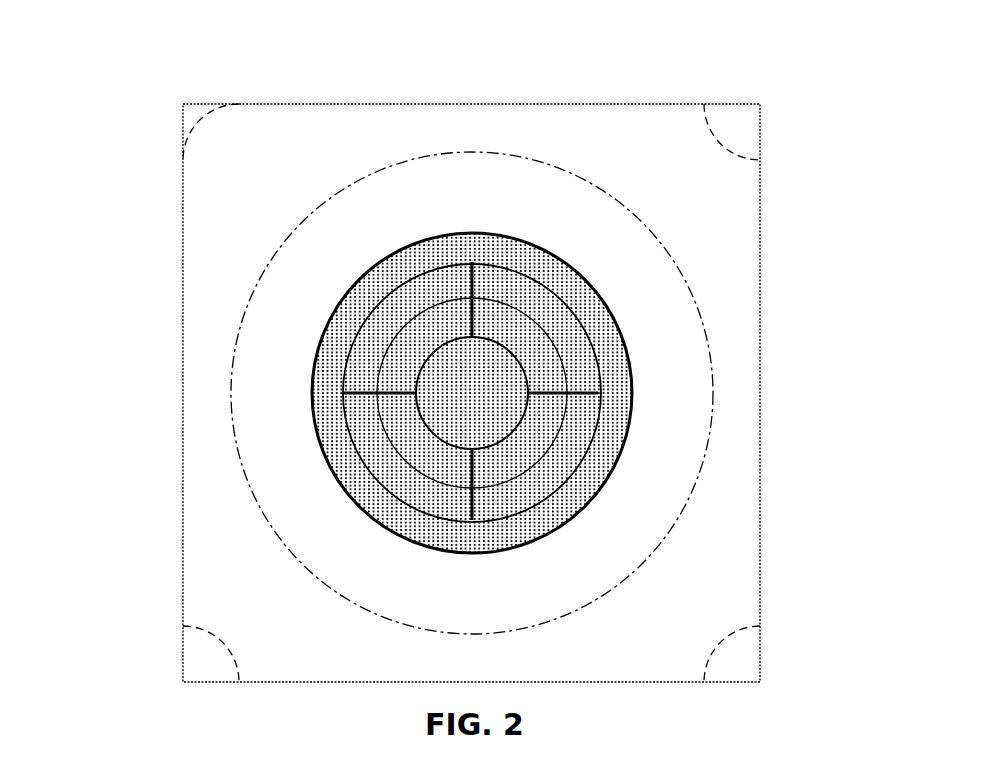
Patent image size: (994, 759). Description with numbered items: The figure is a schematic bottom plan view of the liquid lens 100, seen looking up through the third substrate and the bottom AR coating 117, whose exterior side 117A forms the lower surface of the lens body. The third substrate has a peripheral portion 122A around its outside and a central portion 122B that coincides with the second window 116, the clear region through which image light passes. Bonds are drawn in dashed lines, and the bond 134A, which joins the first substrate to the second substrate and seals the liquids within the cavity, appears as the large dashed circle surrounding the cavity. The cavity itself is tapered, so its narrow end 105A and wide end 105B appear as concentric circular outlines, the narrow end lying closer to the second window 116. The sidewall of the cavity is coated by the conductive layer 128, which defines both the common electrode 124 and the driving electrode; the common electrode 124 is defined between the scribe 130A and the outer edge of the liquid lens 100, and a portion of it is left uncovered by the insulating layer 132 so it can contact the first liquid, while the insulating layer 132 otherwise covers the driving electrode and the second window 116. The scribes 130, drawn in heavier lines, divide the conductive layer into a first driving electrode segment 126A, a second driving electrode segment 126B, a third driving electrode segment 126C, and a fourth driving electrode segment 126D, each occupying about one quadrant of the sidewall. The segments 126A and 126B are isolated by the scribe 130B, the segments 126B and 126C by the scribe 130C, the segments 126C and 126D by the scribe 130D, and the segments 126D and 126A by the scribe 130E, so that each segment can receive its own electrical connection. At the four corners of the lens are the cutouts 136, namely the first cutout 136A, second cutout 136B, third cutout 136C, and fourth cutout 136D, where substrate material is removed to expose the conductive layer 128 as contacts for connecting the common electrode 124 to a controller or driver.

The liquid lens 100 is at (662, 42).
The narrow end 105A is at (413, 412).
The wide end 105B is at (475, 508).
The second window 116 is at (528, 355).
The bottom AR coating 117 is at (740, 242).
The exterior side 117A is at (538, 123).
The peripheral portion 122A is at (190, 388).
The central portion 122B is at (605, 357).
The common electrode 124 is at (447, 187).
The first driving electrode segment 126A is at (423, 330).
The second driving electrode segment 126B is at (490, 325).
The third driving electrode segment 126C is at (525, 440).
The fourth driving electrode segment 126D is at (360, 463).
The conductive layer 128 is at (287, 323).
The scribes 130 is at (627, 430).
The scribe 130A is at (333, 297).
The scribe 130B is at (592, 381).
The scribe 130C is at (630, 373).
The scribe 130D is at (460, 458).
The scribe 130E is at (413, 410).
The insulating layer 132 is at (327, 387).
The bond 134A is at (287, 237).
The cutouts 136 is at (203, 117).
The first cutout 136A is at (197, 142).
The second cutout 136B is at (737, 132).
The third cutout 136C is at (735, 665).
The fourth cutout 136D is at (200, 665).